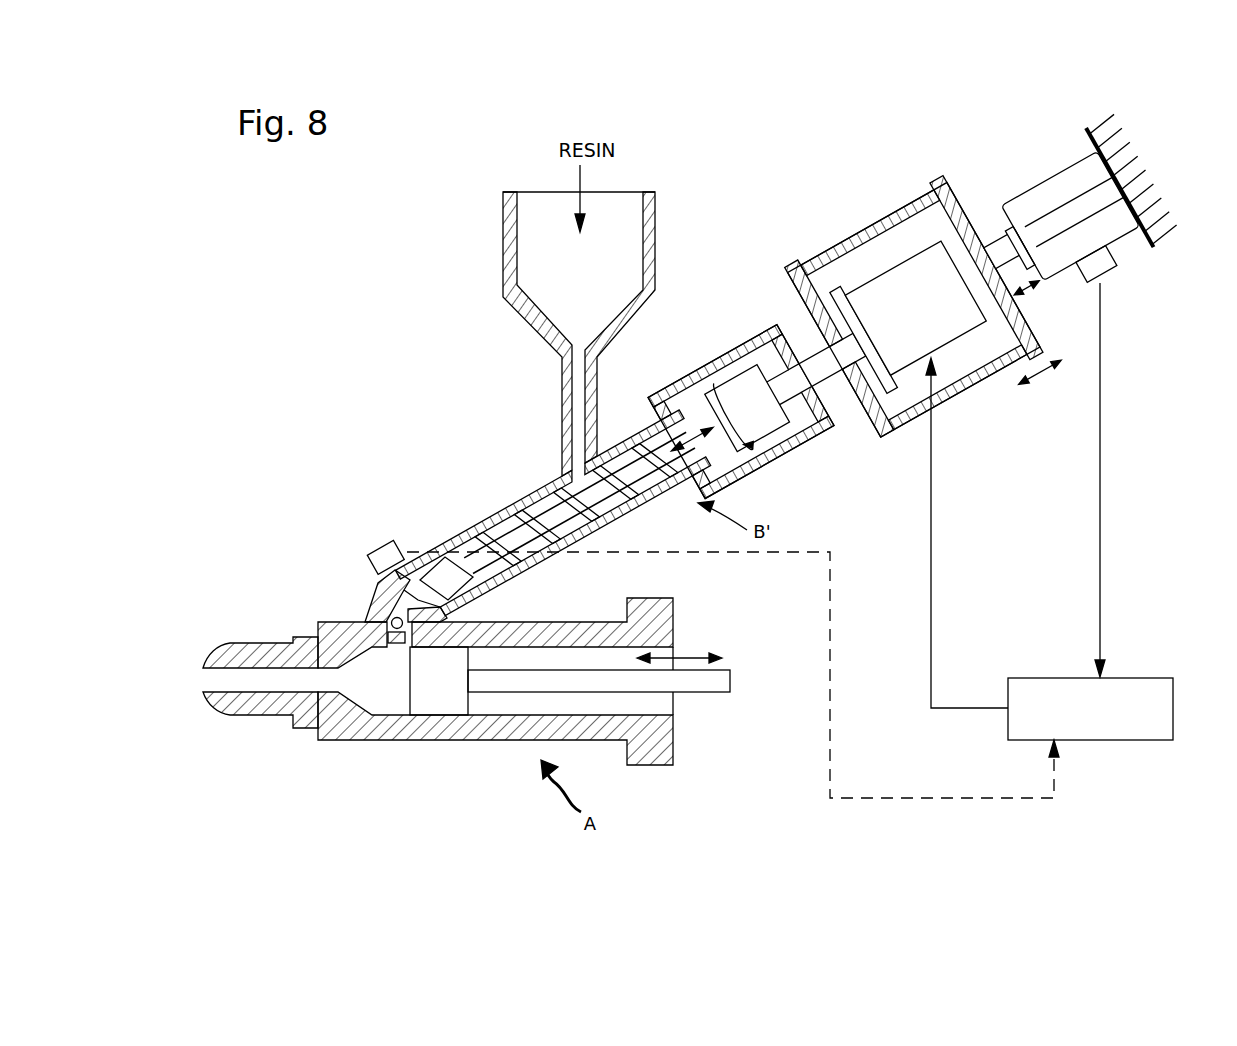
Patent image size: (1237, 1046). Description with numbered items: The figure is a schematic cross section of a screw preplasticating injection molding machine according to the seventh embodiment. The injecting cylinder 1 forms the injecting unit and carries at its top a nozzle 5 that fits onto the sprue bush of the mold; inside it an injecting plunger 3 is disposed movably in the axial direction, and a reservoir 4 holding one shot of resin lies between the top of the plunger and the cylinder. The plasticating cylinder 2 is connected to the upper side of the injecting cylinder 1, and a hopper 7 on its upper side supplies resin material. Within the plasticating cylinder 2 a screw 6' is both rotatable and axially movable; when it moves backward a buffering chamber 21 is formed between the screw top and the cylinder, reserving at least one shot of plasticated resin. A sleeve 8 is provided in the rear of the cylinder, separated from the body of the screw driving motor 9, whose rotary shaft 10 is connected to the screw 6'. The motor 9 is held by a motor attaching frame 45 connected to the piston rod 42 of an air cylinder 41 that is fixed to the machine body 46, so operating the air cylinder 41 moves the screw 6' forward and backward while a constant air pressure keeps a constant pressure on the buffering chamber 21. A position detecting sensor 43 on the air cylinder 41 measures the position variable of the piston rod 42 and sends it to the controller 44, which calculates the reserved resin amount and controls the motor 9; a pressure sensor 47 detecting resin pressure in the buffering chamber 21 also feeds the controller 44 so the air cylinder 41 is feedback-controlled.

The injecting cylinder 1 is at (487, 740).
The plasticating cylinder 2 is at (535, 567).
The injecting plunger 3 is at (435, 705).
The reservoir 4 is at (378, 684).
The nozzle 5 is at (252, 717).
The screw 6' is at (580, 503).
The hopper 7 is at (503, 252).
The sleeve 8 is at (777, 457).
The screw driving motor 9 is at (905, 275).
The rotary shaft 10 is at (833, 380).
The buffering chamber 21 is at (413, 590).
The air cylinder 41 is at (1066, 190).
The piston rod 42 is at (997, 243).
The position detecting sensor 43 is at (1100, 268).
The controller 44 is at (1160, 678).
The motor attaching frame 45 is at (980, 387).
The machine body 46 is at (1127, 158).
The pressure sensor 47 is at (392, 548).